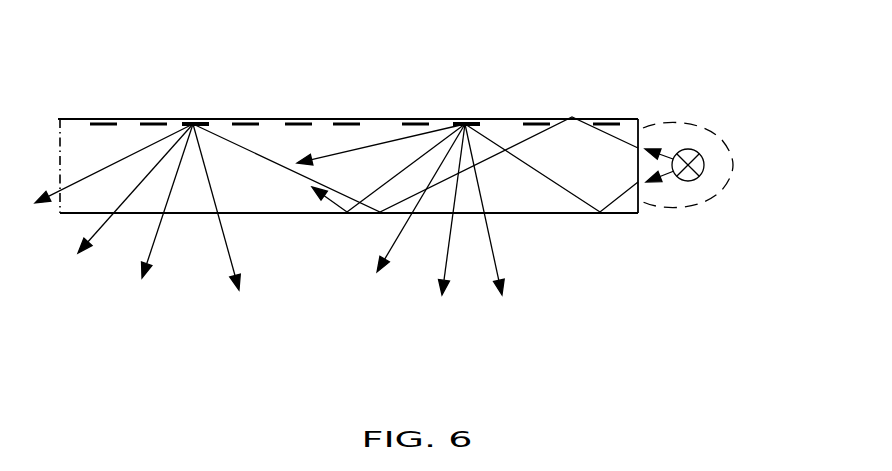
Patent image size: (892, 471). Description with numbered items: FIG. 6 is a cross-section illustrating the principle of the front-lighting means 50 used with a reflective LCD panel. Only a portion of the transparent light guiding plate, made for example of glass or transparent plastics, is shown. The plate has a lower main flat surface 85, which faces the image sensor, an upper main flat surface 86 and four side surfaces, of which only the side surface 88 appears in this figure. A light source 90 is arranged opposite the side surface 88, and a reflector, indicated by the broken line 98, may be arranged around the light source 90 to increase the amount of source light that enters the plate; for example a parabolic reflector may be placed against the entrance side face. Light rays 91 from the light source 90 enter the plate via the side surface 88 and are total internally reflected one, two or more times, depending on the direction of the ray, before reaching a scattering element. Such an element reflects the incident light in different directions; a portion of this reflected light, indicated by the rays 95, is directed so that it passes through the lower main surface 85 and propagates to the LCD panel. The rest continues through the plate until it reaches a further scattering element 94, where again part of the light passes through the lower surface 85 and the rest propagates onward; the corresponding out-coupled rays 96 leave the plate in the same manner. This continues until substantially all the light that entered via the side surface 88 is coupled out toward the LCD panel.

The front-lighting means 50 is at (620, 39).
The lower main flat surface 85 is at (548, 213).
The upper main flat surface 86 is at (515, 116).
The side surface 88 is at (640, 134).
The light source 90 is at (690, 183).
The light rays 91 is at (463, 120).
The further scattering element 94 is at (193, 121).
The rays 95 is at (377, 273).
The light rays emitted from point 94 96 is at (76, 256).
The reflector 98 is at (733, 165).